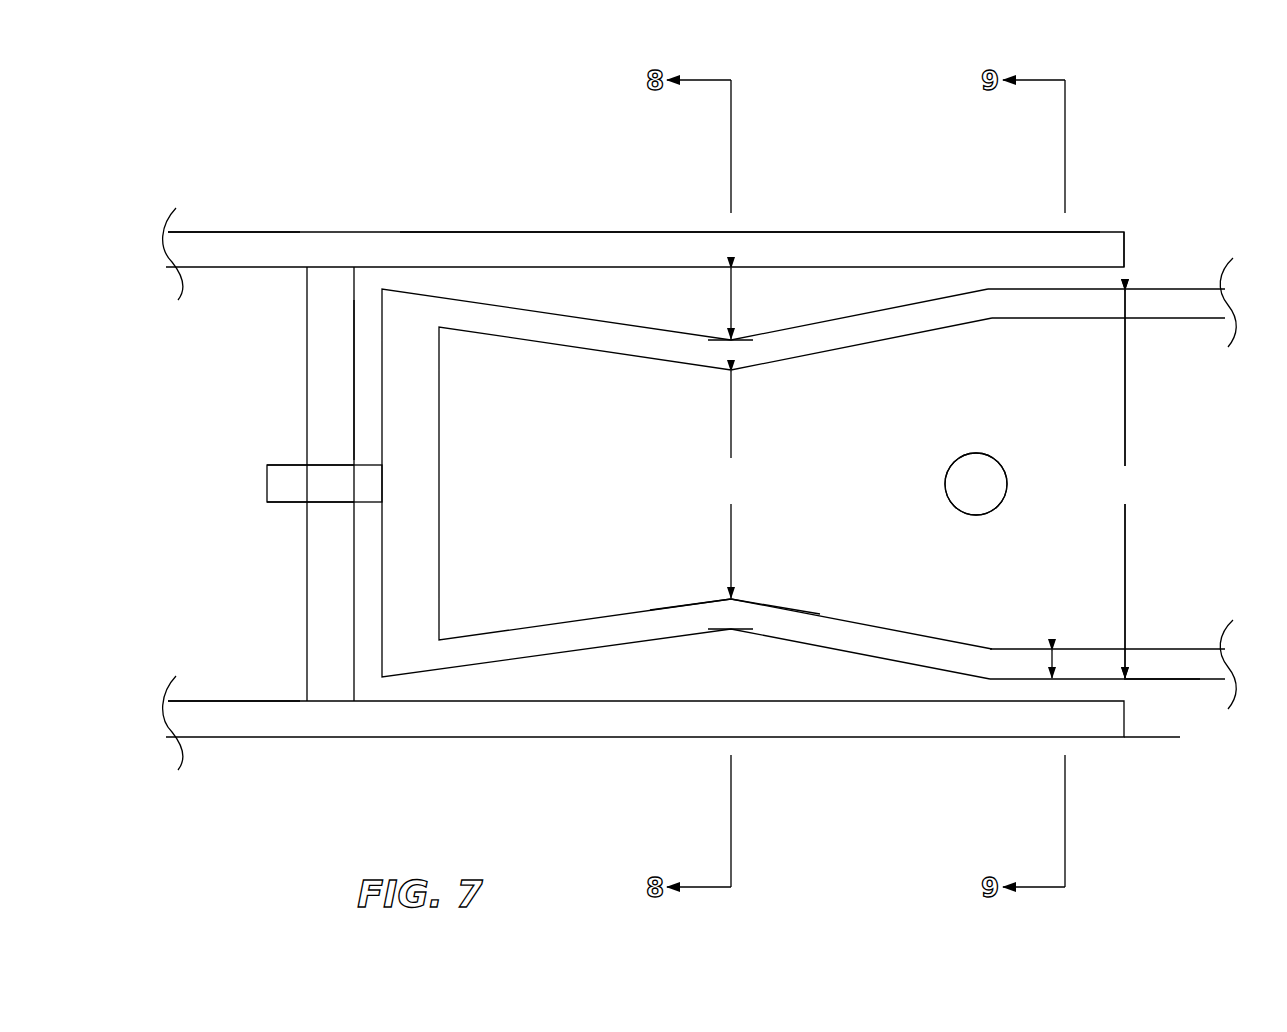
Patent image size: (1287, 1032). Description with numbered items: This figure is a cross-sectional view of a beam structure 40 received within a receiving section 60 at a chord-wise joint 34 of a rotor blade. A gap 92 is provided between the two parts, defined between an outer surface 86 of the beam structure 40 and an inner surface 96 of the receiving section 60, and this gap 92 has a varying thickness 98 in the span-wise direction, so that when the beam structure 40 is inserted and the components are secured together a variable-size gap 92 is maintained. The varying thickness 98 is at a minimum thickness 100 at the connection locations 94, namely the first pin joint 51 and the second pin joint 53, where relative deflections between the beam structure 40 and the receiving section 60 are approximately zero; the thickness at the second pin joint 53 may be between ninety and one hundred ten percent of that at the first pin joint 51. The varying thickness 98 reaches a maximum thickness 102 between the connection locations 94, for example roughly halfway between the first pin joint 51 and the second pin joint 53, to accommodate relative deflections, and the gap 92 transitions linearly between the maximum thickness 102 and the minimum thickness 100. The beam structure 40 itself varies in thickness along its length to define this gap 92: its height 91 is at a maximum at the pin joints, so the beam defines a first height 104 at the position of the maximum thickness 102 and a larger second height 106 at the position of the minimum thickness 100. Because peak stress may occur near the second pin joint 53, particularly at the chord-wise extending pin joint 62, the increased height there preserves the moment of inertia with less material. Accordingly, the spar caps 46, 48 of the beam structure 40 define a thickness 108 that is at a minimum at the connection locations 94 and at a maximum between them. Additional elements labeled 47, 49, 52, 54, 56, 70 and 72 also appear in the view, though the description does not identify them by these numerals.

The chord-wise joint 34 is at (1135, 95).
The beam structure 40 is at (1215, 735).
The spar cap 46 is at (1180, 655).
The lower casing wall 47 is at (922, 737).
The spar cap 48 is at (1182, 320).
The upper casing wall 49 is at (948, 232).
The first pin joint 51 is at (190, 473).
The actuator housing 52 is at (267, 490).
The second pin joint 53 is at (932, 467).
The center body 54 is at (467, 485).
The actuator rod 56 is at (287, 450).
The receiving section 60 is at (148, 790).
The chord-wise extending pin joint 62 is at (1005, 476).
The fan section 70 is at (205, 120).
The strut 72 is at (307, 590).
The outer surface 86 is at (1155, 684).
The height 91 is at (1125, 484).
The gap 92 is at (628, 672).
The connection location 94 is at (262, 380).
The inner surface 96 is at (706, 700).
The varying thickness 98 is at (728, 310).
The minimum thickness 100 is at (405, 228).
The maximum thickness 102 is at (765, 231).
The first height 104 is at (729, 500).
The second height 106 is at (1125, 484).
The thickness 108 is at (1062, 665).